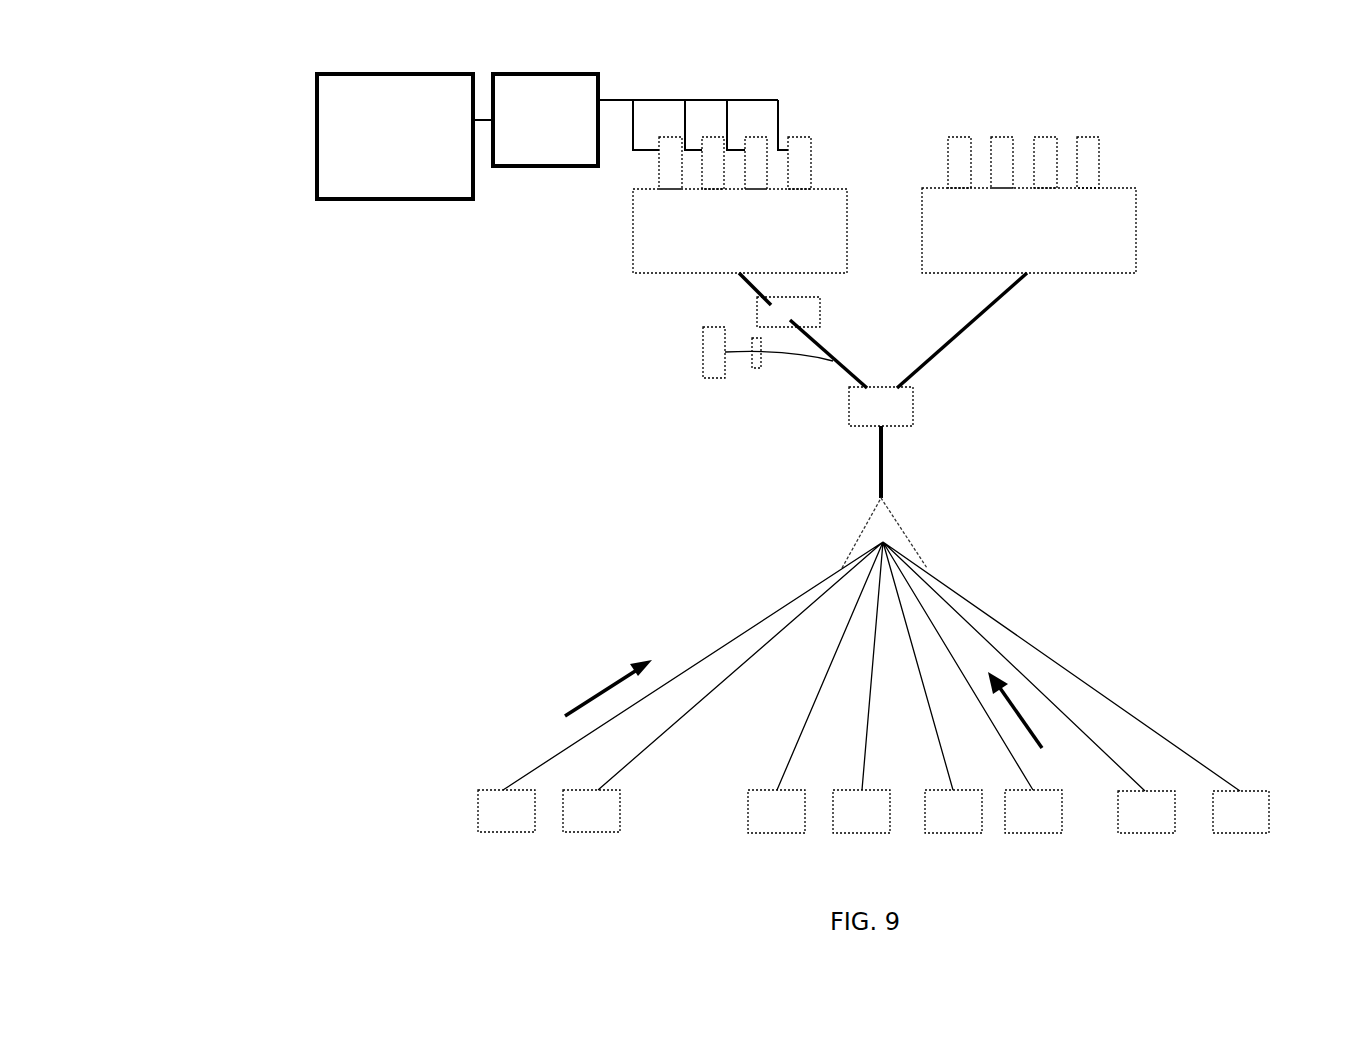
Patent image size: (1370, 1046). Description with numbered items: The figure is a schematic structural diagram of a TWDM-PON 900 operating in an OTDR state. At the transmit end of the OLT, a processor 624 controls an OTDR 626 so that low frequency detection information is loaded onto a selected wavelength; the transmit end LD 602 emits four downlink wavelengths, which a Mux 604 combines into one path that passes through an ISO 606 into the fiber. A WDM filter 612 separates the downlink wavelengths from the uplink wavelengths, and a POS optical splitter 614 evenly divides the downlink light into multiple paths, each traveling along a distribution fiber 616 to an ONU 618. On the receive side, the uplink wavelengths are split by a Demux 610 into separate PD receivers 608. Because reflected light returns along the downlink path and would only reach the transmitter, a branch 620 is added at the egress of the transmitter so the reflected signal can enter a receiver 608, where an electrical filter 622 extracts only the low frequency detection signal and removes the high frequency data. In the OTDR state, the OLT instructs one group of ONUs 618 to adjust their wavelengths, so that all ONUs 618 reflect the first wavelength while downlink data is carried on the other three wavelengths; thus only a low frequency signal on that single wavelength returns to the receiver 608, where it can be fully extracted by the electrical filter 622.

The TWDM-PON 900 is at (784, 469).
The transmit end LD 602 is at (800, 160).
The Mux 604 is at (633, 250).
The ISO 606 is at (757, 312).
The PD receiver 608 is at (958, 147).
The Demux 610 is at (1136, 222).
The WDM filter 612 is at (913, 400).
The POS optical splitter 614 is at (890, 513).
The distribution fiber 616 is at (777, 605).
The ONU 618 is at (487, 795).
The branch 620 is at (808, 358).
The electrical filter 622 is at (747, 357).
The processor 624 is at (317, 163).
The OTDR 626 is at (543, 166).